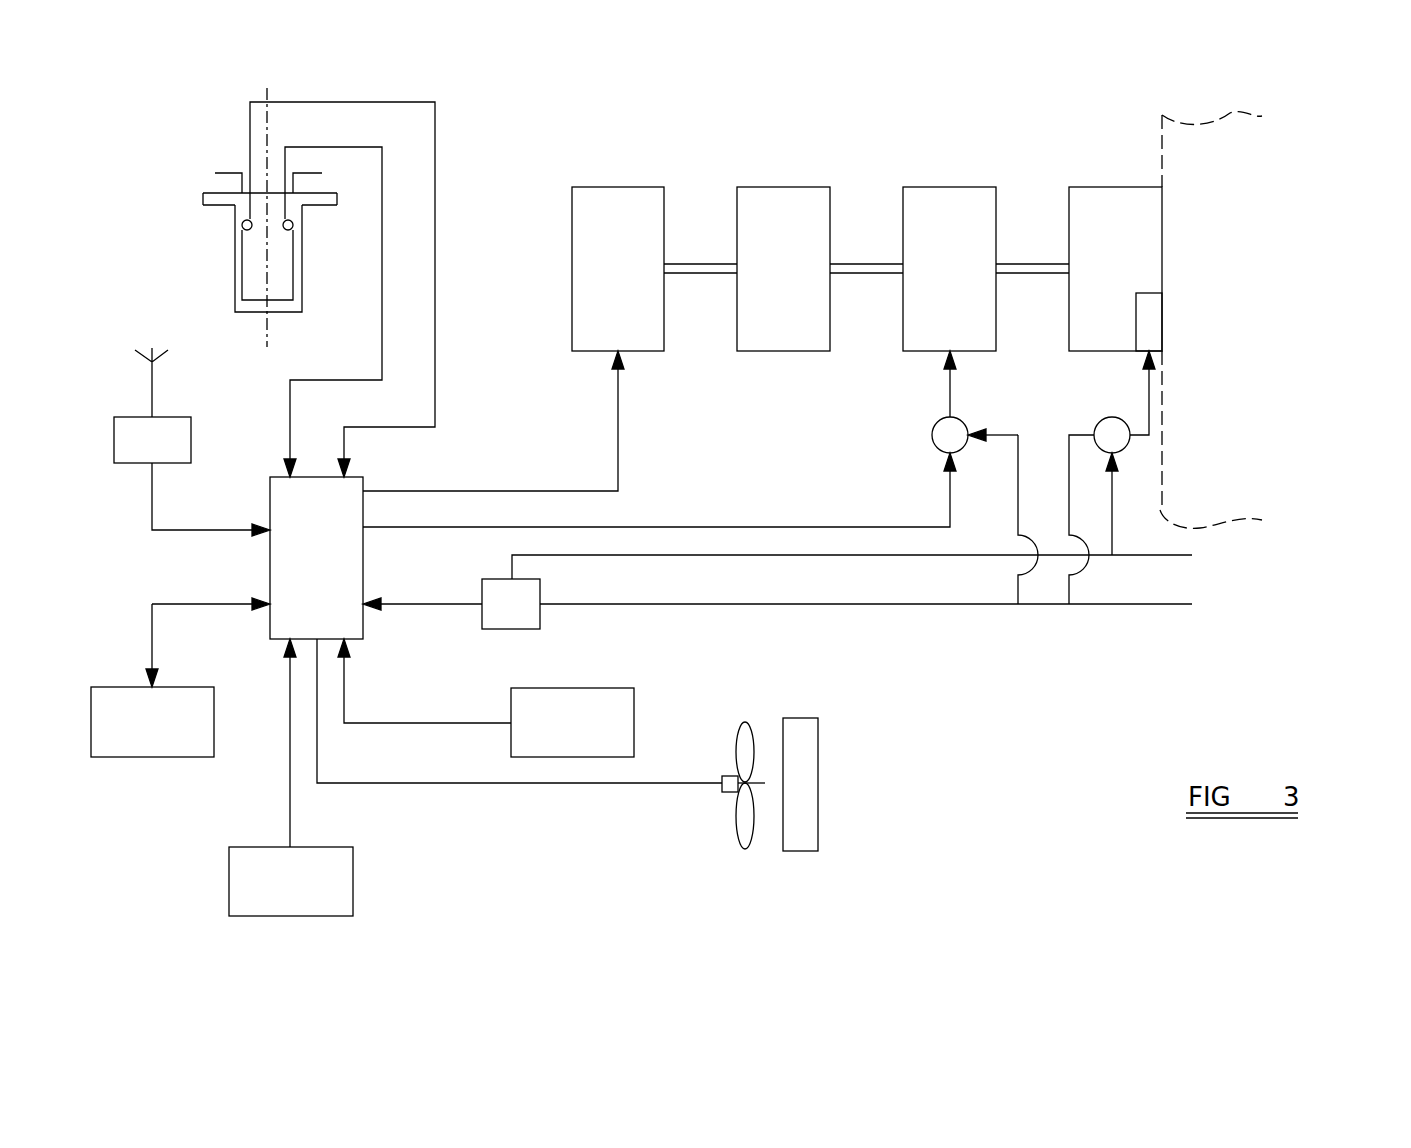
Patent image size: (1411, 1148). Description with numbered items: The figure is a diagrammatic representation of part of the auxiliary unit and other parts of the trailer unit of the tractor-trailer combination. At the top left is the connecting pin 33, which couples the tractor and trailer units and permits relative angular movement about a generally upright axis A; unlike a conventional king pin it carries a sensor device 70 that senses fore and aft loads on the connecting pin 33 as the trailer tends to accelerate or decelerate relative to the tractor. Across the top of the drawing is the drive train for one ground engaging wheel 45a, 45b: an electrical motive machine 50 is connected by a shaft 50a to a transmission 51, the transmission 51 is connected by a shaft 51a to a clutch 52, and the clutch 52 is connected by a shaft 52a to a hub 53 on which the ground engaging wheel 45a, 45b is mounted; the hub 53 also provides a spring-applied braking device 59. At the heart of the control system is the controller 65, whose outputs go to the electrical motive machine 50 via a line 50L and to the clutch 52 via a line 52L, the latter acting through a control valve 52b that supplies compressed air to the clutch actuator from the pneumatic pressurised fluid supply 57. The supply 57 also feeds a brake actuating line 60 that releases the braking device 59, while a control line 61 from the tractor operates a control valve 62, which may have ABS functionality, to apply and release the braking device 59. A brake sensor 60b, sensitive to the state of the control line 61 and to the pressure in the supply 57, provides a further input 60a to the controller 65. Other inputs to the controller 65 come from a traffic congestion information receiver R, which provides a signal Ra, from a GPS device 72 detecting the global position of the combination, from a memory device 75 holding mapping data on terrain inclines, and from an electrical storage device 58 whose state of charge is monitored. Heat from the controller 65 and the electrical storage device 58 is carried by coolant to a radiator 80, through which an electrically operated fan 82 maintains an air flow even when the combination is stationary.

The sensor device 70 is at (230, 158).
The connecting pin 33 is at (255, 267).
The upright axis A is at (262, 337).
The traffic congestion information receiver R is at (191, 445).
The signal Ra is at (200, 528).
The controller 65 is at (316, 558).
The memory device 75 is at (175, 737).
The GPS device 72 is at (340, 890).
The electrical storage device 58 is at (634, 730).
The fan 82 is at (745, 722).
The radiator 80 is at (820, 778).
The input 60a is at (430, 603).
The brake sensor 60b is at (517, 620).
The brake actuating line 60 is at (820, 605).
The supply of pneumatic pressurised fluid 57 is at (1140, 604).
The control line 61 is at (1170, 555).
The line 52L is at (710, 527).
The line 50L is at (480, 490).
The control valve 52b is at (932, 437).
The control valve 62 is at (1094, 428).
The electrical motive machine 50 is at (625, 213).
The transmission 51 is at (798, 210).
The clutch 52 is at (953, 210).
The hub 53 is at (1120, 213).
The shaft 50a is at (705, 262).
The shaft 51a is at (870, 262).
The shaft 52a is at (1040, 262).
The braking device 59 is at (1153, 330).
The ground engaging wheel 45a is at (1190, 225).
The ground engaging wheel 45b is at (1212, 118).